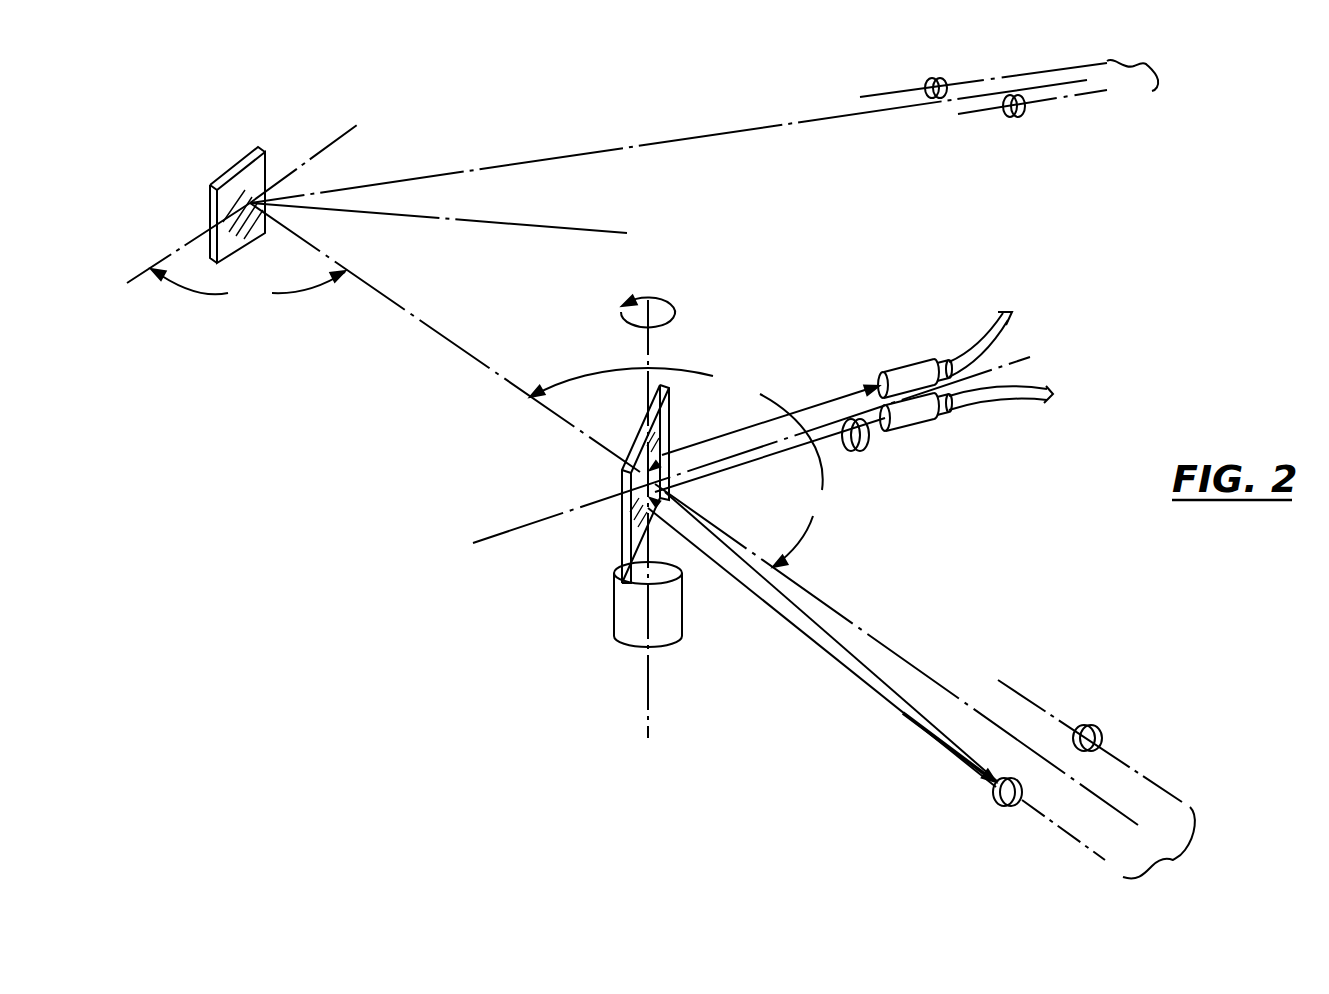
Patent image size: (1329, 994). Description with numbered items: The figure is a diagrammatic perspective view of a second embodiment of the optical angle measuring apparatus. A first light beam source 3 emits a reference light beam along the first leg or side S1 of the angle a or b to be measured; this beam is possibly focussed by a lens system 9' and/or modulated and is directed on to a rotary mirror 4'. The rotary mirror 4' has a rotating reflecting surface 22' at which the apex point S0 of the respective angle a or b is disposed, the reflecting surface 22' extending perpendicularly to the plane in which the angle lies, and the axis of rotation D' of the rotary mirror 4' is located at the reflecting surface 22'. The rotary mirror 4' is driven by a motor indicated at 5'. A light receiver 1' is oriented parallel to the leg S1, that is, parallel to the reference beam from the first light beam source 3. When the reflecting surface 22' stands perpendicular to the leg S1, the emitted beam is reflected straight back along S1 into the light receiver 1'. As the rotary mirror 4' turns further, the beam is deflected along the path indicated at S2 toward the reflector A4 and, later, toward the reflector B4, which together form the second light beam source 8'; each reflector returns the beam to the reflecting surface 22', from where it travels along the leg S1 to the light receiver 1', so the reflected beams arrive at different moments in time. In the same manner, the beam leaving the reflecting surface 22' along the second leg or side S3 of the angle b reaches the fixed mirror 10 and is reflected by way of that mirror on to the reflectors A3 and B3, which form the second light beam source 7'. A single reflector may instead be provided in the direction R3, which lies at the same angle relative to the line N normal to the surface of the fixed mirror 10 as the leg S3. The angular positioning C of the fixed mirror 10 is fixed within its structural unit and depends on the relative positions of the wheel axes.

The fixed mirror 10 is at (223, 178).
The angular positioning of the fixed mirror C is at (248, 286).
The direction of single reflector R3 is at (530, 161).
The line normal to the fixed mirror surface N is at (505, 223).
The second leg or side of the angle b S3 is at (413, 326).
The reflector A3 is at (928, 79).
The reflector B3 is at (1009, 113).
The second light beam source 7' is at (1137, 69).
The axis of rotation D' is at (627, 517).
The rotary mirror 4' is at (602, 484).
The rotating reflecting surface 22' is at (589, 560).
The motor 5' is at (633, 633).
The apex point S0 is at (617, 496).
The first leg or side of the angle S1 is at (828, 412).
The angle to be measured b is at (635, 383).
The angle to be measured a is at (796, 480).
The light receiver 1' is at (945, 355).
The lens system 9' is at (875, 456).
The first light beam source 3 is at (918, 418).
The reflected beam from beam splitter S2 is at (889, 651).
The reflector A4 is at (1093, 727).
The reflector B4 is at (997, 800).
The second light beam source 8' is at (1160, 842).